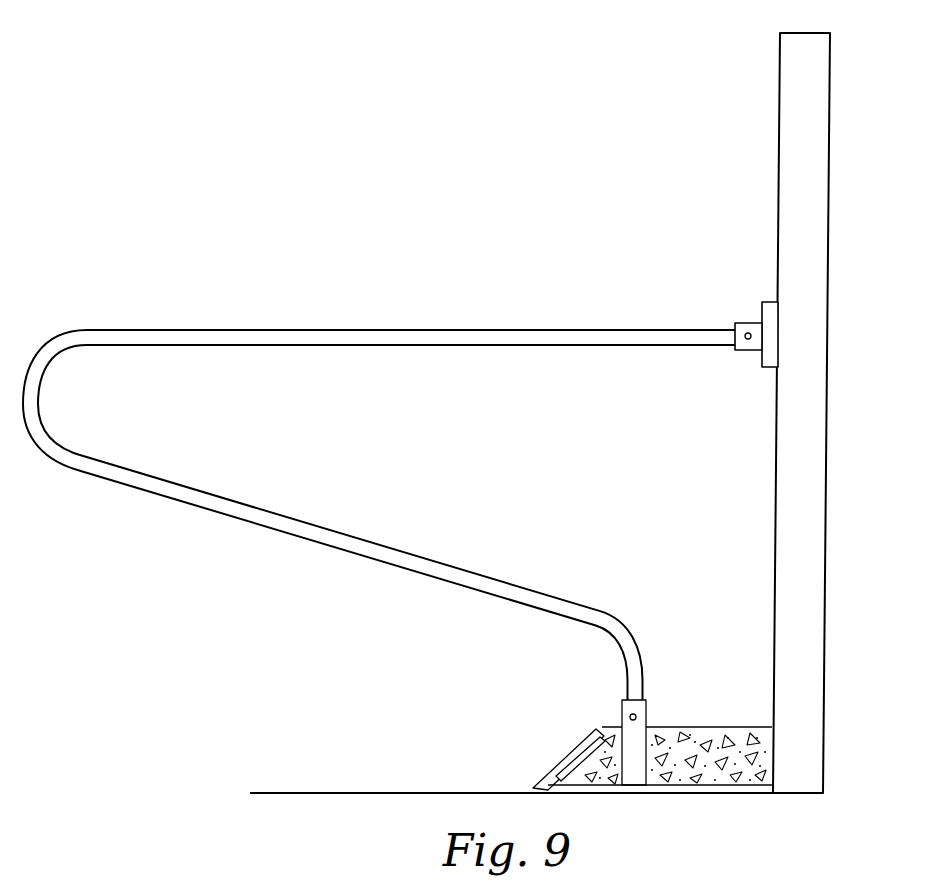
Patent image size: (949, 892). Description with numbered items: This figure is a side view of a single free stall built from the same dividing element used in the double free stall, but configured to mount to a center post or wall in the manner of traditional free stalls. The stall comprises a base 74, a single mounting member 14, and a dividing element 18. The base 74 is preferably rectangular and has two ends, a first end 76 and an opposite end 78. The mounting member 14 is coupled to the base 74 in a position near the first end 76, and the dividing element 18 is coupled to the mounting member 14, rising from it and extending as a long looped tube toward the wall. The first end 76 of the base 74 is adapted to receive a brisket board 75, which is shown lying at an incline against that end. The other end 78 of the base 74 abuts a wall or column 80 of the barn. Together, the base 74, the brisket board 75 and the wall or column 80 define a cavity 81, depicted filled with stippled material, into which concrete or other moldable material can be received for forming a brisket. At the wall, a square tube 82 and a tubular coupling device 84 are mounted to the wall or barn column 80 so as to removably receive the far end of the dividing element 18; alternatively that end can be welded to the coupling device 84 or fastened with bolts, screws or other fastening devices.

The mounting member 14 is at (647, 713).
The dividing element 18 is at (318, 330).
The base 74 is at (574, 794).
The brisket board 75 is at (580, 748).
The end of base 76 is at (547, 780).
The other end of base 78 is at (752, 795).
The wall or column 80 is at (830, 263).
The cavity 81 is at (747, 730).
The square tube 82 is at (768, 300).
The tubular coupling device 84 is at (747, 320).